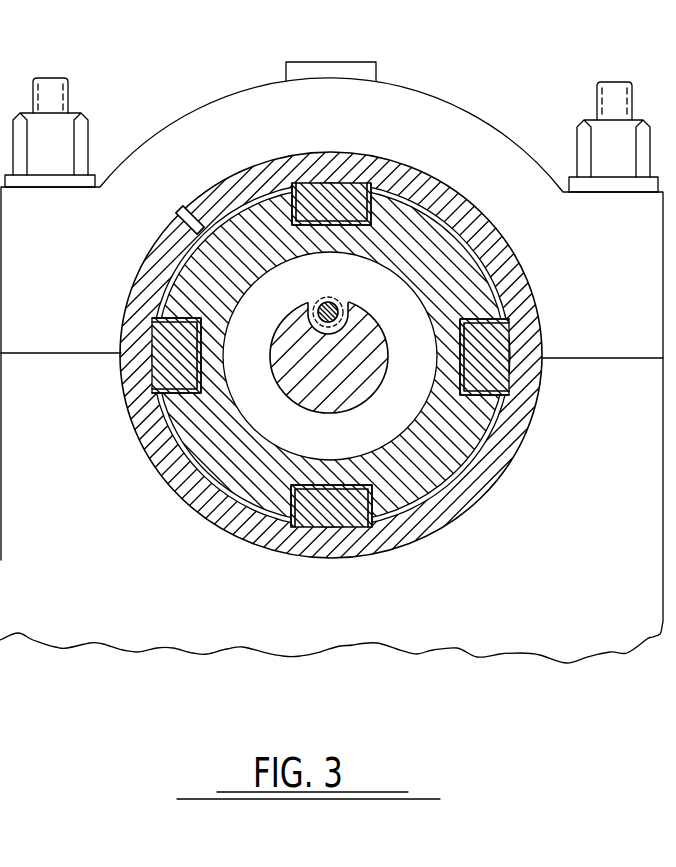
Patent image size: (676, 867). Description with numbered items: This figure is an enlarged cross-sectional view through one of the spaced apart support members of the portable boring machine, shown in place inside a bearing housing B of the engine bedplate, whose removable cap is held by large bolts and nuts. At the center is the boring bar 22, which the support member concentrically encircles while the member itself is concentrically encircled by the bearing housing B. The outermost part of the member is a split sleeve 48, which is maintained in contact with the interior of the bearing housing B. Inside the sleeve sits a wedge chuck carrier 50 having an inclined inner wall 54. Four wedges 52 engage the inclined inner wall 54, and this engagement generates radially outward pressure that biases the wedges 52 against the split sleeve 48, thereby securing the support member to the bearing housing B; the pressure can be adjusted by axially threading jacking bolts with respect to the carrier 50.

The bearing housing B is at (184, 97).
The boring bar 22 is at (368, 334).
The split sleeve 48 is at (415, 180).
The wedge chuck carrier 50 is at (450, 245).
The wedges 52 is at (341, 200).
The inclined inner wall 54 is at (293, 238).